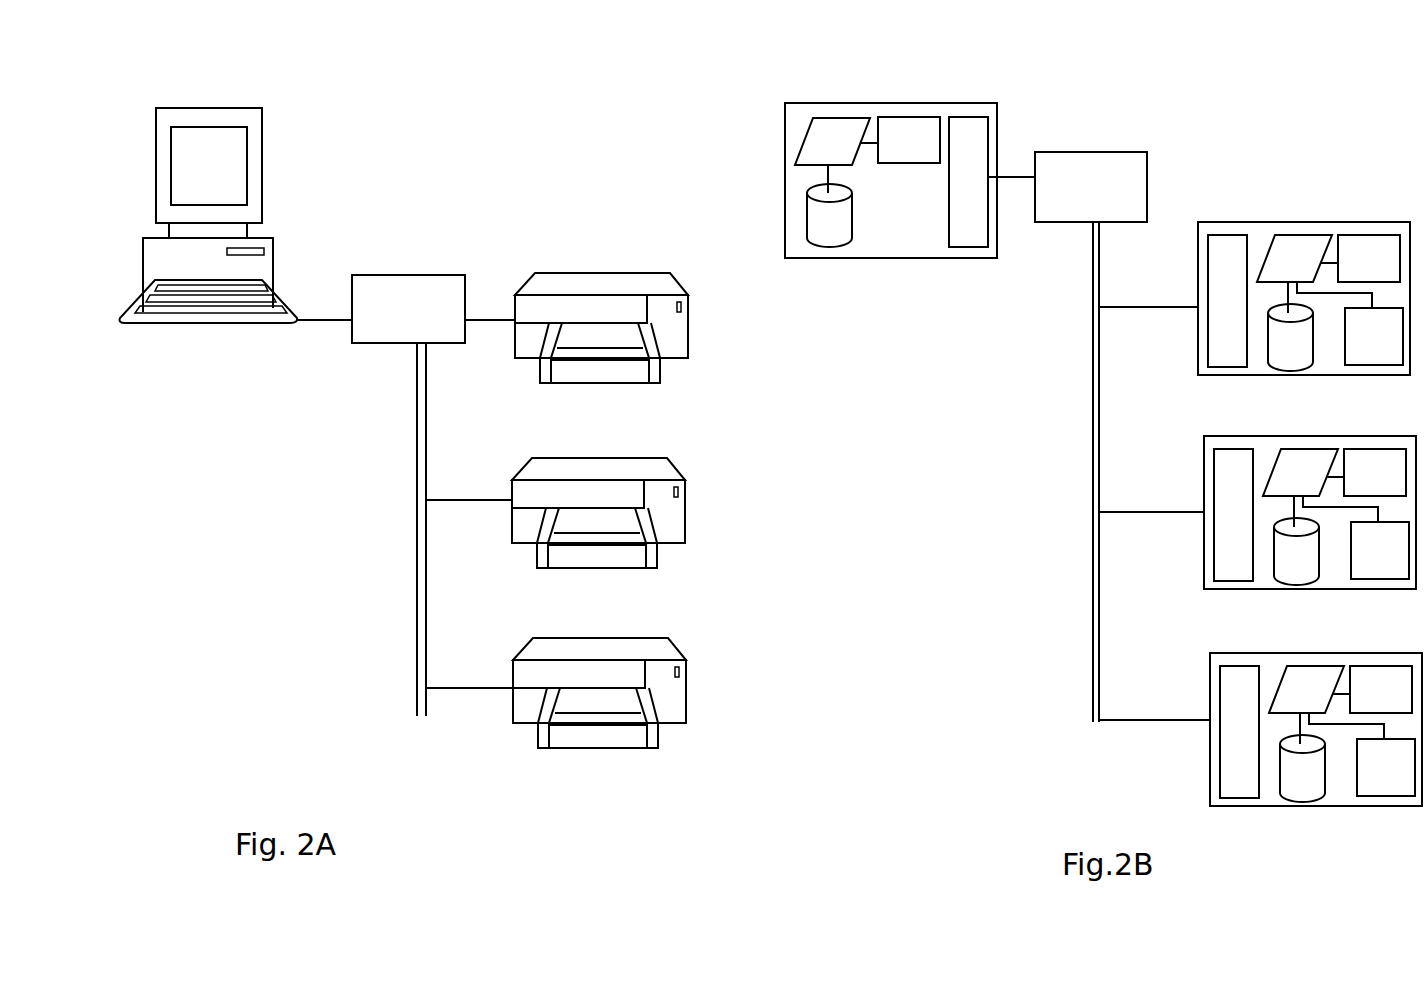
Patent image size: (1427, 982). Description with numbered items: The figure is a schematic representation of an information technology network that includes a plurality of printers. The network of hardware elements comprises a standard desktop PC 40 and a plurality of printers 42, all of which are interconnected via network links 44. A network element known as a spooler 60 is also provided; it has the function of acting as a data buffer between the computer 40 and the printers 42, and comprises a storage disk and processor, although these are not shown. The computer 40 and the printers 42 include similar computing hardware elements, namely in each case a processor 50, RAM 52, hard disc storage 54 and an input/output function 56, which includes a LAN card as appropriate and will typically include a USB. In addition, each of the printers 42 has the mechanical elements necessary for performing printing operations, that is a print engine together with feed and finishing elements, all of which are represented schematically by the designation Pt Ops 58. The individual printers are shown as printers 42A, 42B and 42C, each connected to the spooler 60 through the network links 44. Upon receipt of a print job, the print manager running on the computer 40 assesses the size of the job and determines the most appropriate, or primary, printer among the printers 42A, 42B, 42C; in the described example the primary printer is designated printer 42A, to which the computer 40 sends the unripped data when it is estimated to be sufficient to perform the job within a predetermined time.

In FIG. 2A, the desktop PC 40 is at (223, 148).
In FIG. 2B, the desktop PC 40 is at (950, 102).
In FIG. 2A, the printers 42 is at (668, 327).
In FIG. 2B, the primary printer 42A is at (1272, 322).
In FIG. 2B, the printer 42B is at (1204, 538).
In FIG. 2B, the printer 42C is at (1210, 742).
In FIG. 2B, the network links 44 is at (1092, 260).
In FIG. 2B, the processor 50 is at (827, 128).
In FIG. 2B, the RAM 52 is at (898, 120).
In FIG. 2B, the hard disc storage 54 is at (818, 227).
In FIG. 2B, the input/output function 56 is at (972, 147).
In FIG. 2B, the Pt Ops 58 is at (1355, 347).
In FIG. 2A, the spooler 60 is at (378, 332).
In FIG. 2B, the spooler 60 is at (1147, 202).